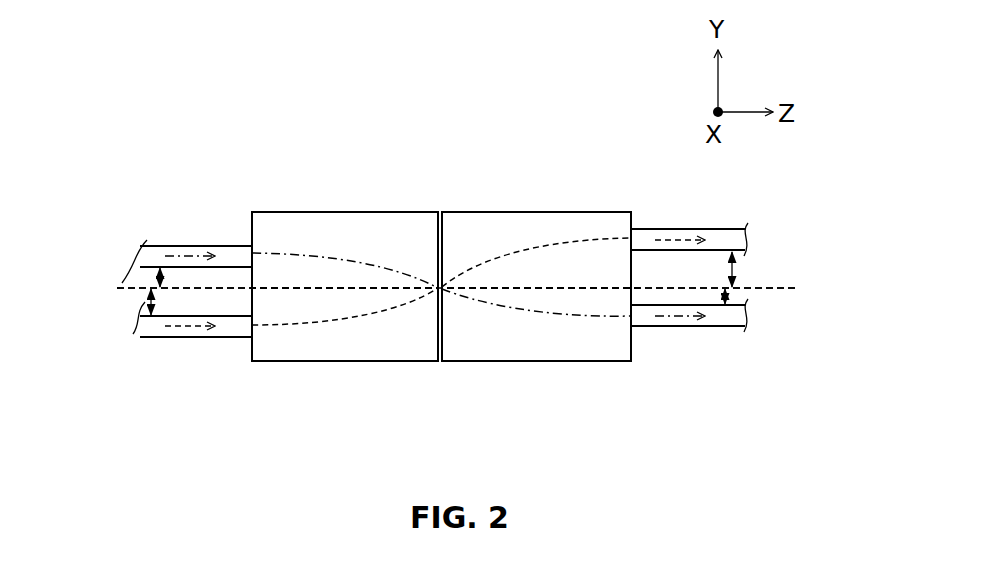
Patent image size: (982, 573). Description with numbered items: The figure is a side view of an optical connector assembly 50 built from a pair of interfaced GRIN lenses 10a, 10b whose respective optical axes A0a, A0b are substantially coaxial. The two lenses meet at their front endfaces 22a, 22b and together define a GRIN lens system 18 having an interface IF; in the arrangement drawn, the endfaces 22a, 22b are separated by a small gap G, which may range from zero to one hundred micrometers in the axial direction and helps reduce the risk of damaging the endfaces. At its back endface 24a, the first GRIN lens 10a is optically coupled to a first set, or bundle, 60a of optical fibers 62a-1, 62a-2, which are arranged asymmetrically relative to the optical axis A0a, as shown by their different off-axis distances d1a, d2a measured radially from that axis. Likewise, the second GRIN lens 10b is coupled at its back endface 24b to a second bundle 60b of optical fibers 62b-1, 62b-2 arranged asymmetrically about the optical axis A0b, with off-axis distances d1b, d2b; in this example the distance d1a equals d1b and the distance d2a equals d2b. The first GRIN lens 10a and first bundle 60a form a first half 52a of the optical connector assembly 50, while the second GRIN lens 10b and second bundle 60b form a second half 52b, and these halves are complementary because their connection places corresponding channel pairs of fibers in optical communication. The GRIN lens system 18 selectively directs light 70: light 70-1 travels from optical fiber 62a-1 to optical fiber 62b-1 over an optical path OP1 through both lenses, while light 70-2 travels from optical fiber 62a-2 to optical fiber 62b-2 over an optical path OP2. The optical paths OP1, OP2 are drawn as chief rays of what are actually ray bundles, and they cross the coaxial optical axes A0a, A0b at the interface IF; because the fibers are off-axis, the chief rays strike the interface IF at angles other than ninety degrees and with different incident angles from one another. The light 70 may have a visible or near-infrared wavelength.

The optical connector assembly 50 is at (208, 58).
The GRIN lens system 18 is at (623, 122).
The first GRIN lens 10a is at (342, 208).
The second GRIN lens 10b is at (534, 202).
The front endface of first GRIN lens 22a is at (440, 350).
The front endface of second GRIN lens 22b is at (441, 228).
The back endface of first GRIN lens 24a is at (252, 305).
The back endface of second GRIN lens 24b is at (636, 272).
The gap G is at (450, 233).
The interface IF is at (452, 336).
The light 70 is at (304, 344).
The light traveling over first optical path 70-1 is at (267, 253).
The light traveling over second optical path 70-2 is at (672, 234).
The first optical path OP1 is at (356, 250).
The second optical path OP2 is at (360, 336).
The first half of optical connector assembly 52a is at (177, 116).
The second half of optical connector assembly 52b is at (653, 412).
The first set of optical fibers 60a is at (182, 206).
The second set of optical fibers 60b is at (700, 212).
The first optical fiber of first set 62a-1 is at (177, 245).
The second optical fiber of first set 62a-2 is at (165, 340).
The first optical fiber of second set 62b-1 is at (723, 330).
The second optical fiber of second set 62b-2 is at (735, 229).
The off-axis distance of first optical fiber of first set d1a is at (128, 266).
The off-axis distance of second optical fiber of first set d2a is at (143, 299).
The off-axis distance of first optical fiber of second set d1b is at (728, 292).
The off-axis distance of second optical fiber of second set d2b is at (740, 268).
The optical axis of first GRIN lens A0a is at (155, 281).
The optical axis of second GRIN lens A0b is at (760, 287).